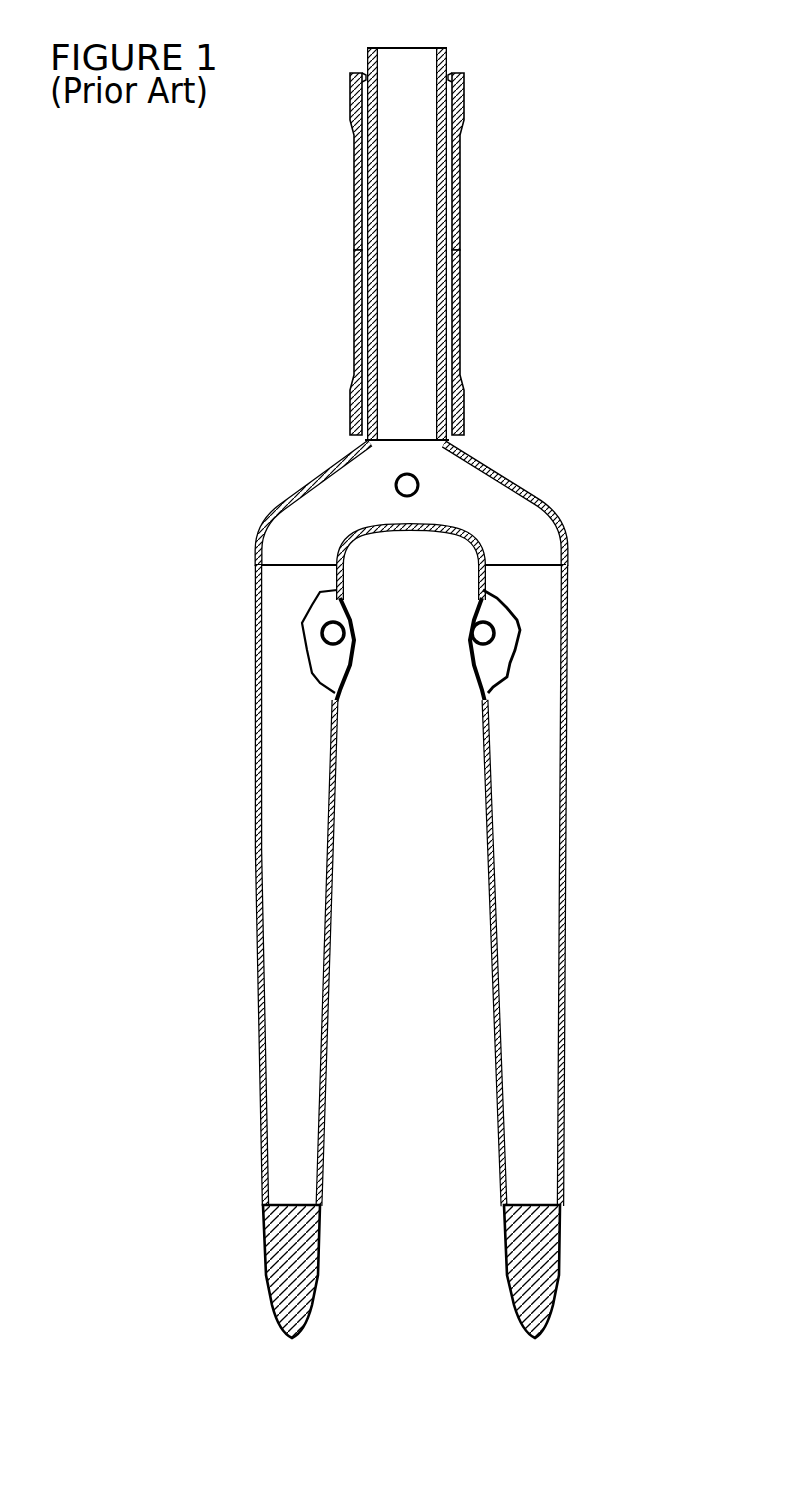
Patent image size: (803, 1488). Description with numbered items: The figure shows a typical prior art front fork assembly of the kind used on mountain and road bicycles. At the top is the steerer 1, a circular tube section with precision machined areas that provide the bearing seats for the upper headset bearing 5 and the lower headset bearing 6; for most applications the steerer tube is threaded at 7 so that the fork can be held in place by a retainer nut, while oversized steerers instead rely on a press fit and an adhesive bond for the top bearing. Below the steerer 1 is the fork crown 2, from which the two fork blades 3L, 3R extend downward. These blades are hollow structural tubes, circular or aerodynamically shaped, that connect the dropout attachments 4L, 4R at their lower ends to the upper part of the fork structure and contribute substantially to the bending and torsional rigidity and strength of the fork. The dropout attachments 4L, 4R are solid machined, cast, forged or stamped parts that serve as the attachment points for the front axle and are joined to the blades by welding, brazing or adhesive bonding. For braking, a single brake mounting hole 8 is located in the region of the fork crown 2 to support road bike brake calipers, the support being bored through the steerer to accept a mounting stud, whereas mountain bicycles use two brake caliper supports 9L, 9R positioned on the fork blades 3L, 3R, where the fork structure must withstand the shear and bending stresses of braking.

The steerer 1 is at (446, 244).
The fork crown 2 is at (523, 480).
The fork blade 3L is at (252, 885).
The fork blade 3R is at (569, 885).
The front axle dropout attachment 4L is at (241, 1271).
The front axle dropout attachment 4R is at (595, 1271).
The upper headset bearing 5 is at (438, 342).
The lower headset bearing 6 is at (440, 147).
The threaded portion of steerer tube 7 is at (381, 26).
The brake mounting hole 8 is at (320, 442).
The brake caliper support 9L is at (258, 629).
The brake caliper support 9R is at (550, 632).